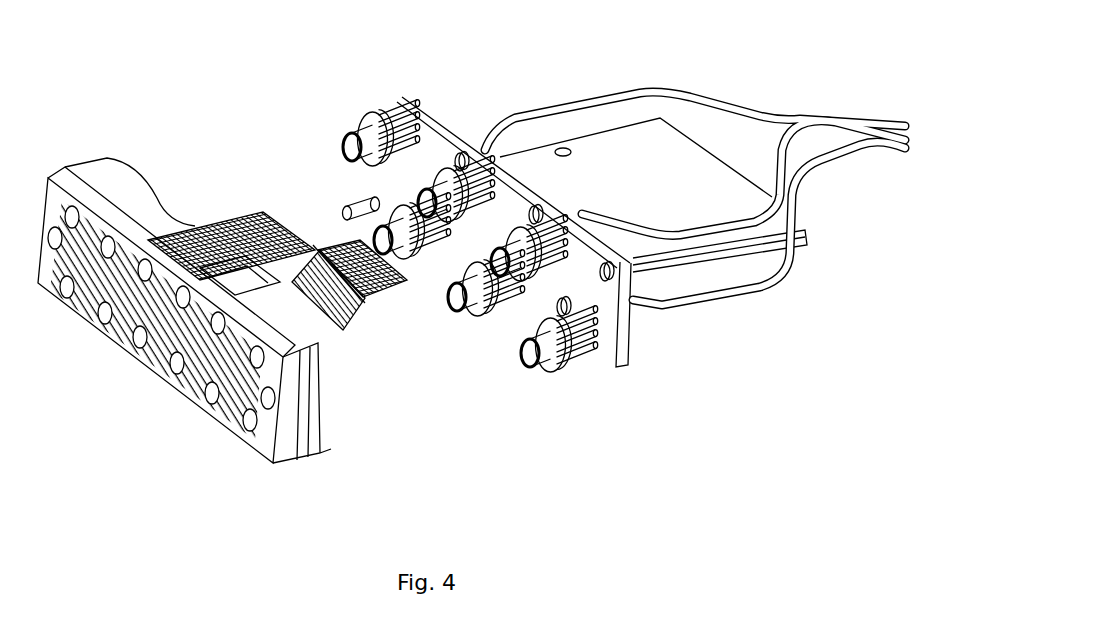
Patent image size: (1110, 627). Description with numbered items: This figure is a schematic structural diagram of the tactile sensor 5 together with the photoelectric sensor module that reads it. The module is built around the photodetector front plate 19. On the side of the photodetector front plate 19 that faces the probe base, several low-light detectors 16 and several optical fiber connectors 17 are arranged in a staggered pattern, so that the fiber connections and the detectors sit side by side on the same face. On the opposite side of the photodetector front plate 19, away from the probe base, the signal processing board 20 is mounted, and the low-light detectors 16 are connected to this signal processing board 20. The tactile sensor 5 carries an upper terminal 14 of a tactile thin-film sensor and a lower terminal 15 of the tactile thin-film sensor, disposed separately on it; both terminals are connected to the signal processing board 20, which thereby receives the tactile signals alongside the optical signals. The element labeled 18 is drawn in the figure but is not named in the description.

The tactile sensor 5 is at (48, 176).
The upper terminal of the tactile thin-film sensor 14 is at (243, 213).
The lower terminal of the tactile thin-film sensor 15 is at (333, 333).
The low-light detectors 16 is at (318, 120).
The optical fiber connectors 17 is at (378, 135).
The tube 18 is at (482, 107).
The photodetector front plate 19 is at (580, 353).
The signal processing board 20 is at (597, 155).